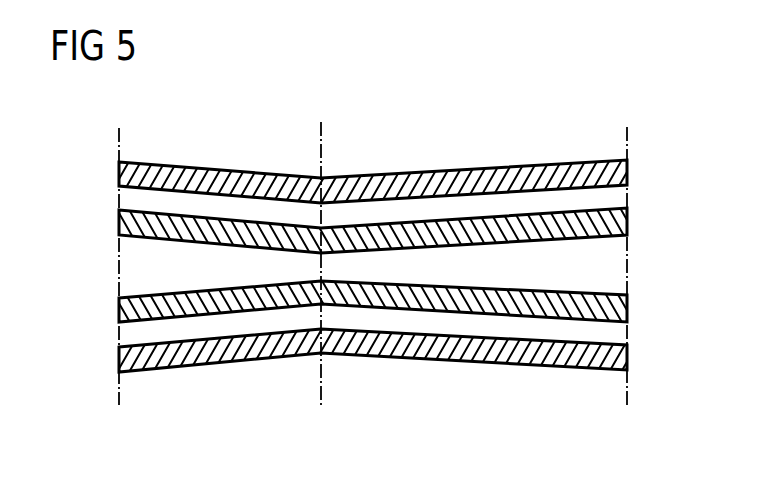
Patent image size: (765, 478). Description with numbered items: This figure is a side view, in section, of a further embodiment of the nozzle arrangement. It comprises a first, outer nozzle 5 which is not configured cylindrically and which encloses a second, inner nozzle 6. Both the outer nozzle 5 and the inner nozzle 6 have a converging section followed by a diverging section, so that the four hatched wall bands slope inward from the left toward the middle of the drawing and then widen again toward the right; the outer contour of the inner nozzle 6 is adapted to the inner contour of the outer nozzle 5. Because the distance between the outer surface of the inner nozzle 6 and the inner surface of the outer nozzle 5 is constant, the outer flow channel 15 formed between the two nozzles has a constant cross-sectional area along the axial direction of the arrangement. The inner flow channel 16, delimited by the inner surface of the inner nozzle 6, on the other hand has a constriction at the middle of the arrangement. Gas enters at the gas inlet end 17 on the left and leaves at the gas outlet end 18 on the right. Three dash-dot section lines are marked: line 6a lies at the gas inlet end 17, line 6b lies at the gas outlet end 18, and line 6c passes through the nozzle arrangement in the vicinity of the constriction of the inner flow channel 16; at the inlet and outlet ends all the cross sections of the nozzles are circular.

The outer nozzle 5 is at (425, 163).
The inner nozzle 6 is at (478, 208).
The cross-section line at gas inlet end 6a is at (120, 272).
The cross-section line at gas outlet end 6b is at (627, 270).
The cross-section line at constriction 6c is at (321, 272).
The outer flow channel 15 is at (428, 325).
The inner flow channel 16 is at (512, 277).
The gas inlet end 17 is at (116, 260).
The gas outlet end 18 is at (631, 257).